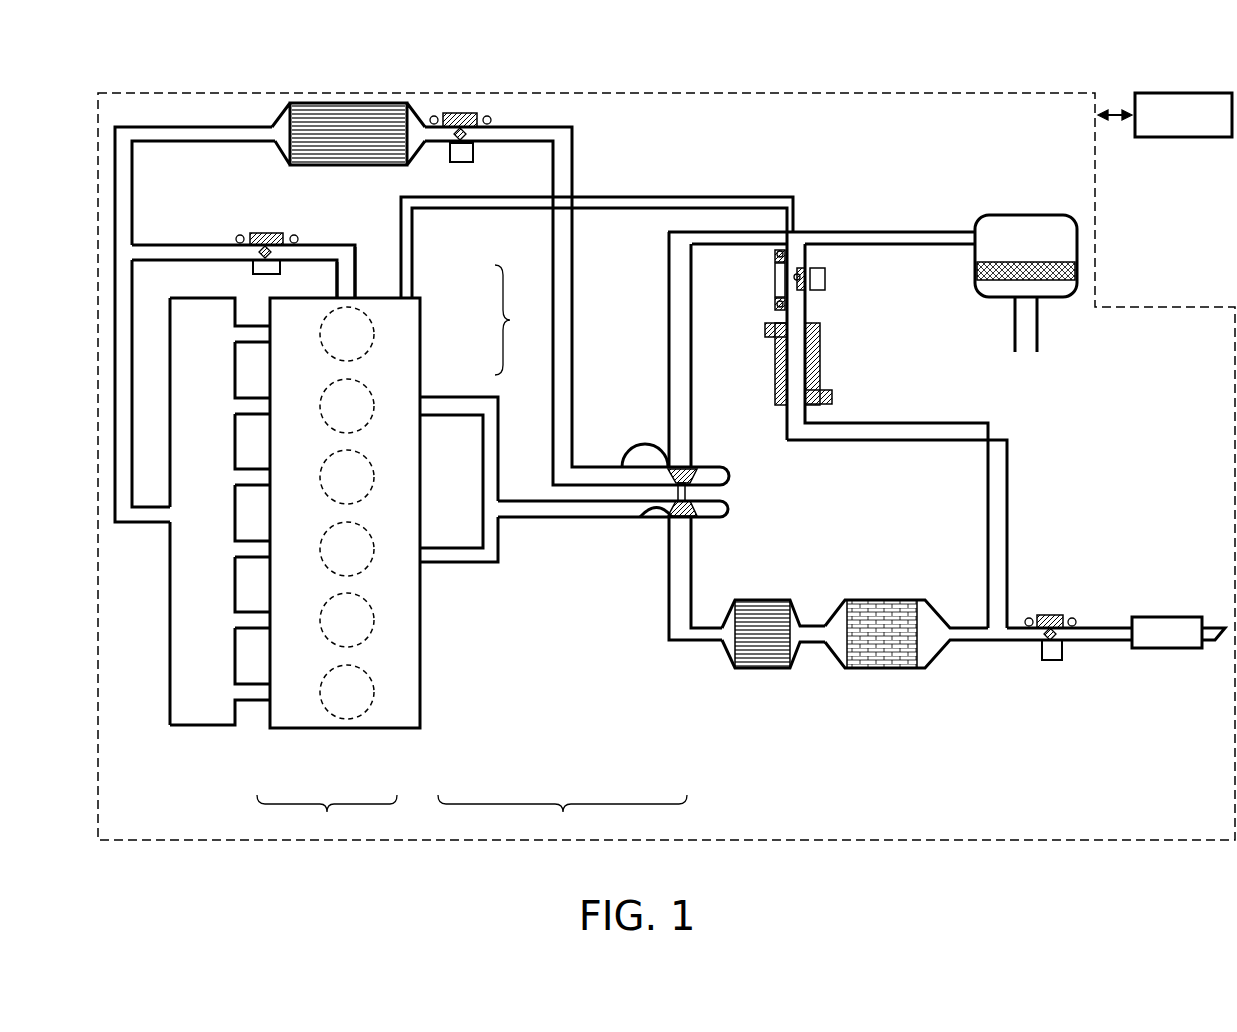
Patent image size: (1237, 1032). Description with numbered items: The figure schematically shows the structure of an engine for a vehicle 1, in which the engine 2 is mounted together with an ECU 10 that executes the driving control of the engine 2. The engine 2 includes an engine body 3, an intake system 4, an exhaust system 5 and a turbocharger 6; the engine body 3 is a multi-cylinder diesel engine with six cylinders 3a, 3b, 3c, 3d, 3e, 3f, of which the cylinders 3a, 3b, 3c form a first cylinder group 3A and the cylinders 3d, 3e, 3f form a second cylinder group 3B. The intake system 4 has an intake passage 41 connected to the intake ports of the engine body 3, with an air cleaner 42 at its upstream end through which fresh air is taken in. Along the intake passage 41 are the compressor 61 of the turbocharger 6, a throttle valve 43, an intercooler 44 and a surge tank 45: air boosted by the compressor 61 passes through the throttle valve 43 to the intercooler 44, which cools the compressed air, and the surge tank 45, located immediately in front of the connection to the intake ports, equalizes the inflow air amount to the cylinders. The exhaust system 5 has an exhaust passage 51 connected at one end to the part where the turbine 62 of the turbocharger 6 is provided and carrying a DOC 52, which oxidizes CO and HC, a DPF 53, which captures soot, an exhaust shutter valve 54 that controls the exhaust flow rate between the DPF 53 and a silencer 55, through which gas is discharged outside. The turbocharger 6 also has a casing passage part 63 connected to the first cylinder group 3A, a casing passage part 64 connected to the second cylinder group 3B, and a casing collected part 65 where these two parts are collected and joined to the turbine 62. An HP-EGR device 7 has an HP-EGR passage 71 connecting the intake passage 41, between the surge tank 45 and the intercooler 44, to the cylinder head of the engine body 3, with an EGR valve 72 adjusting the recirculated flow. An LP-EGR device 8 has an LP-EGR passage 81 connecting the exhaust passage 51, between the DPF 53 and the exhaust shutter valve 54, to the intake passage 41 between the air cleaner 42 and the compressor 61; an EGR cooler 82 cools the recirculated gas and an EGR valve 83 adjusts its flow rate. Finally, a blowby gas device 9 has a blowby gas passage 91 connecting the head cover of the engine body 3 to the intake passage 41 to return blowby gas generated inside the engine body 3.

The vehicle 1 is at (1092, 55).
The engine 2 is at (786, 88).
The engine body 3 is at (422, 622).
The first cylinder group 3A is at (429, 384).
The second cylinder group 3B is at (327, 680).
The cylinder 3a is at (374, 327).
The cylinder 3b is at (376, 391).
The cylinder 3c is at (376, 461).
The cylinder 3d is at (322, 566).
The cylinder 3e is at (321, 629).
The cylinder 3f is at (375, 691).
The intake system 4 is at (307, 279).
The intake passage 41 is at (573, 142).
The air cleaner 42 is at (1017, 228).
The throttle valve 43 is at (487, 116).
The intercooler 44 is at (340, 103).
The surge tank 45 is at (168, 665).
The exhaust system 5 is at (941, 646).
The exhaust passage 51 is at (668, 632).
The DOC (Diesel Oxidation Catalyst) 52 is at (760, 668).
The DPF (Diesel Particulate Filter) 53 is at (882, 668).
The exhaust shutter valve 54 is at (1045, 633).
The silencer 55 is at (1168, 617).
The turbocharger 6 is at (574, 616).
The compressor 61 is at (623, 467).
The turbine 62 is at (683, 520).
The casing passage part 63 is at (520, 517).
The casing passage part 64 is at (490, 562).
The casing collected part 65 is at (550, 517).
The HP-EGR device 7 is at (247, 231).
The HP-EGR passage 71 is at (338, 250).
The EGR valve 72 is at (292, 232).
The LP-EGR device 8 is at (911, 436).
The LP-EGR passage 81 is at (920, 423).
The EGR cooler 82 is at (775, 375).
The EGR valve 83 is at (800, 285).
The blowby gas device 9 is at (688, 384).
The blowby gas passage 91 is at (680, 197).
The ECU (Engine Control Unit) 10 is at (1190, 138).